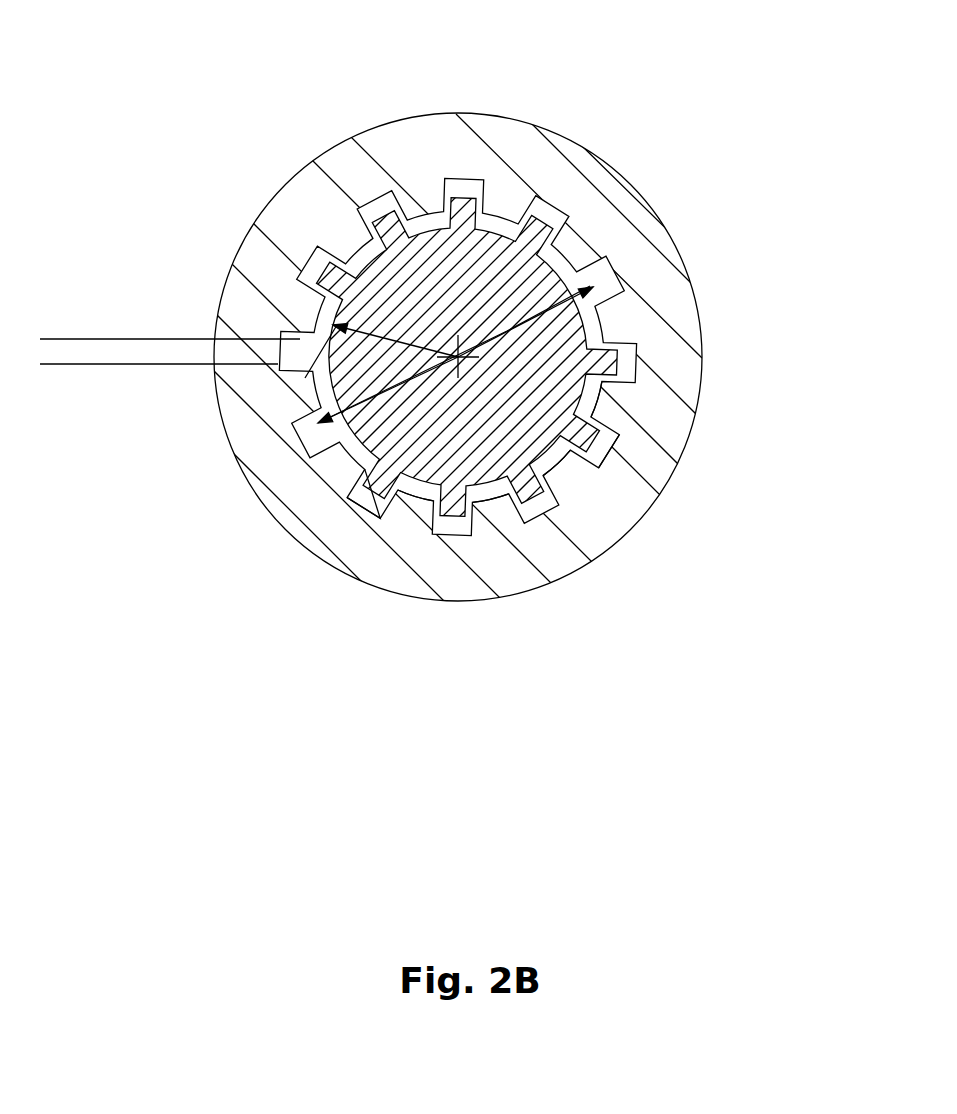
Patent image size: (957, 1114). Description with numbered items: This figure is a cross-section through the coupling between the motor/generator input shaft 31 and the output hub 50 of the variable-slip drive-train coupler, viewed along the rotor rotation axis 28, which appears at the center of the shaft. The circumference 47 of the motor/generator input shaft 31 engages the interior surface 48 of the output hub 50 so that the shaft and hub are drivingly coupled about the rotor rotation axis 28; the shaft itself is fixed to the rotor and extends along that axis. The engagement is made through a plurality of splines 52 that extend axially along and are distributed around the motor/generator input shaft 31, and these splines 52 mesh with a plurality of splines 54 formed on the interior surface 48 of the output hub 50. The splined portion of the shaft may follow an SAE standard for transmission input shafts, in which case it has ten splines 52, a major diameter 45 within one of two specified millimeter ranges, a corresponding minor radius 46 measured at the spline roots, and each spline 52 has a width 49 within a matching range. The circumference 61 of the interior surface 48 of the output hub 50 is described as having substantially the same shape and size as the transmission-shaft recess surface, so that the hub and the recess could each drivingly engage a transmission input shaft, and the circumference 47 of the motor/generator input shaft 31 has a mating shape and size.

The rotor rotation axis 28 is at (513, 215).
The motor/generator input shaft 31 is at (560, 323).
The major diameter 45 is at (507, 331).
The minor radius 46 is at (310, 377).
The circumference of motor/generator input shaft 47 is at (598, 397).
The interior surface of output hub 48 is at (603, 262).
The width of splines 49 is at (48, 280).
The output hub 50 is at (420, 138).
The splines of motor/generator input shaft 52 is at (552, 506).
The splines of interior surface 54 is at (505, 515).
The circumference of interior surface 61 is at (365, 507).